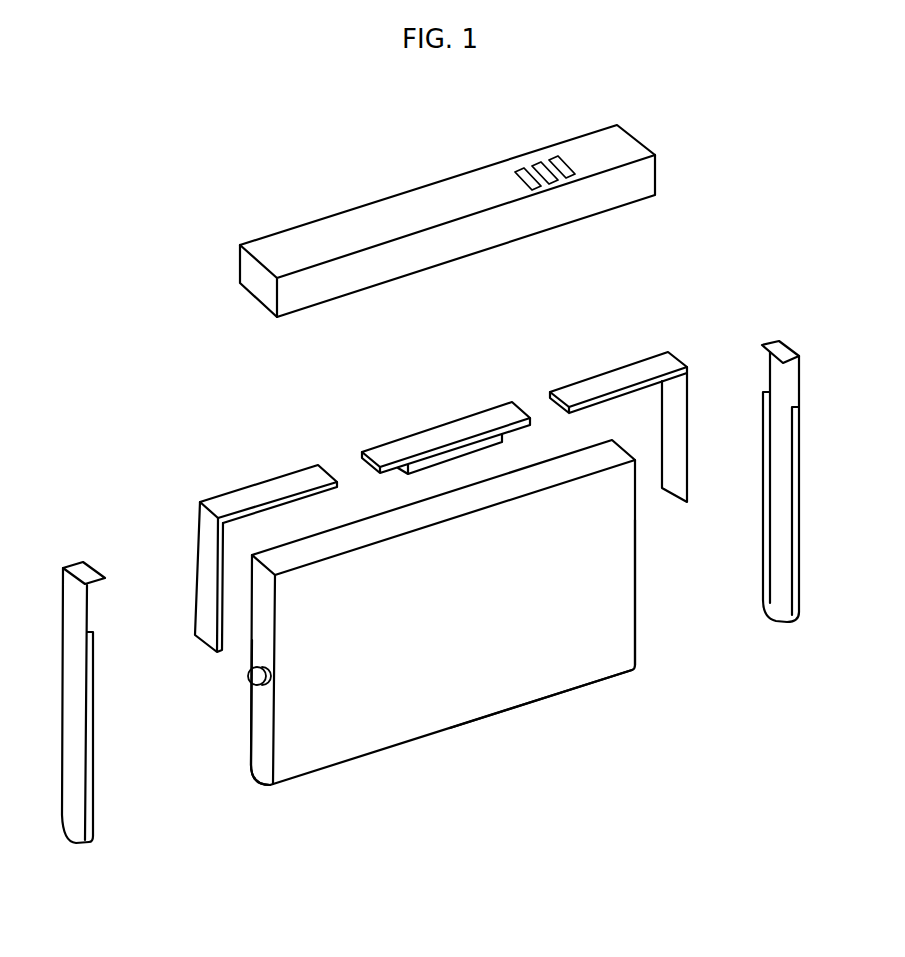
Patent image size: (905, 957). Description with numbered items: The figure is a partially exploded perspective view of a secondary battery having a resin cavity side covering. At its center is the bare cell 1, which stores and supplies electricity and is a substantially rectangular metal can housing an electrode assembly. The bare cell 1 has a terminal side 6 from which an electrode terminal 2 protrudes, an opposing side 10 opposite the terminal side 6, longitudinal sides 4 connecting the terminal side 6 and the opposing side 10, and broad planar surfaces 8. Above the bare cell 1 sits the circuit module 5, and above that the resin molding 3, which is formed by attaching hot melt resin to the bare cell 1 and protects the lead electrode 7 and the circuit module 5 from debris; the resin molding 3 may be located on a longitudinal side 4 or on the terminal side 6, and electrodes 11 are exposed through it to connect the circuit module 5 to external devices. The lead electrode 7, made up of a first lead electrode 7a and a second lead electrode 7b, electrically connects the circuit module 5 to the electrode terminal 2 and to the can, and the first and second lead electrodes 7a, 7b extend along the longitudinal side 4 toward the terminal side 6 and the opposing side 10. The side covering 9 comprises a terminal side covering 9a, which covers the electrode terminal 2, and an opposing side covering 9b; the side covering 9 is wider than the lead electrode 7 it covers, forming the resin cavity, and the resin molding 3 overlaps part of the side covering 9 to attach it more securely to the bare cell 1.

The bare cell 1 is at (471, 736).
The electrode terminal 2 is at (248, 679).
The resin molding 3 is at (447, 203).
The longitudinal side 4 is at (445, 590).
The circuit module 5 is at (442, 437).
The terminal side 6 is at (260, 752).
The lead electrode 7 is at (558, 310).
The first lead electrode 7a is at (280, 488).
The second lead electrode 7b is at (605, 383).
The planar surfaces 8 is at (573, 668).
The side covering 9 is at (752, 690).
The terminal side covering 9a is at (90, 817).
The opposing side covering 9b is at (785, 603).
The opposing side 10 is at (635, 607).
The electrodes 11 is at (535, 162).